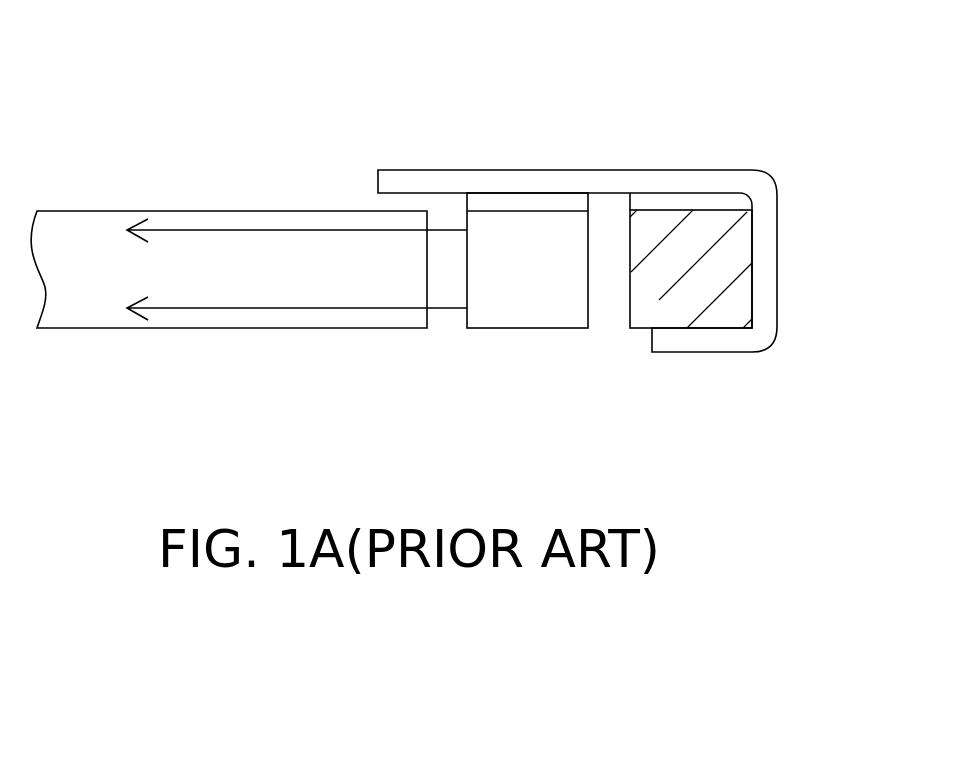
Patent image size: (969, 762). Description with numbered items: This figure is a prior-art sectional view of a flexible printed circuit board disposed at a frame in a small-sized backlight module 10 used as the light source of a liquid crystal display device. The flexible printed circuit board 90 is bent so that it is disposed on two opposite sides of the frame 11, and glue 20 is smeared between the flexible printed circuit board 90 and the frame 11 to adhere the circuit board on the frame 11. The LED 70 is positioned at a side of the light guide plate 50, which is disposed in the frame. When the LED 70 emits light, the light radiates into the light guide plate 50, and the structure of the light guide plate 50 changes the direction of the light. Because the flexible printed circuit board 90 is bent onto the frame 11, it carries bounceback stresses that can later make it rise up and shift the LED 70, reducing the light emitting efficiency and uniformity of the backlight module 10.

The backlight module 10 is at (850, 23).
The frame 11 is at (692, 317).
The glue 20 is at (700, 203).
The light guide plate 50 is at (70, 320).
The LED 70 is at (522, 318).
The flexible printed circuit board 90 is at (545, 182).